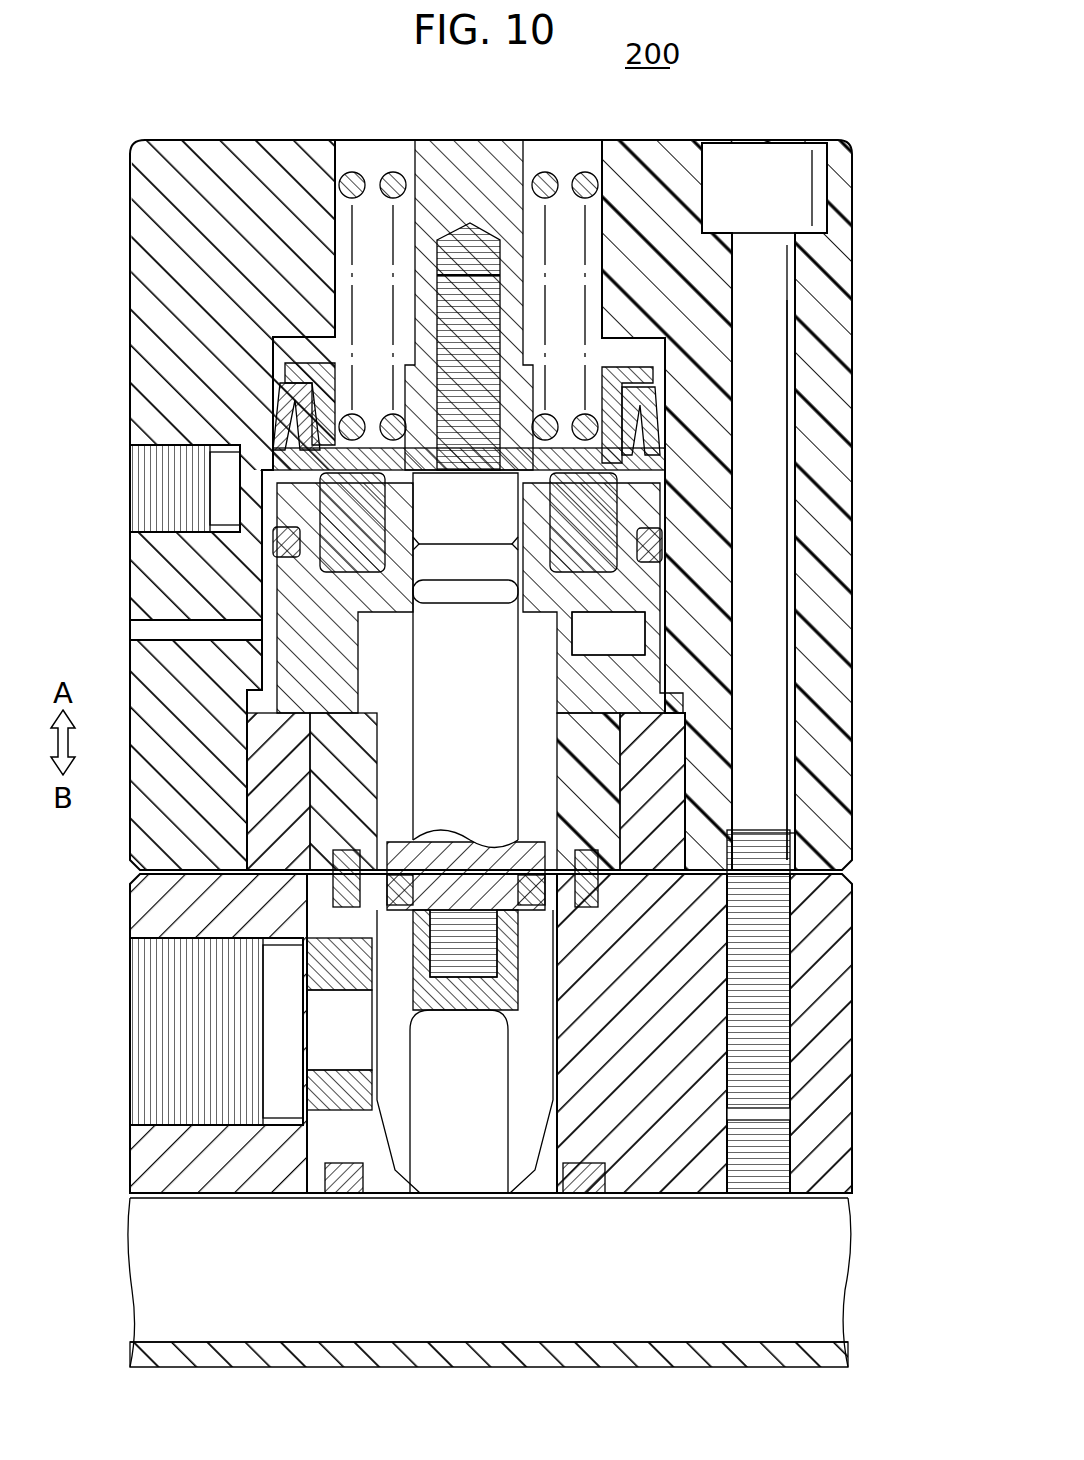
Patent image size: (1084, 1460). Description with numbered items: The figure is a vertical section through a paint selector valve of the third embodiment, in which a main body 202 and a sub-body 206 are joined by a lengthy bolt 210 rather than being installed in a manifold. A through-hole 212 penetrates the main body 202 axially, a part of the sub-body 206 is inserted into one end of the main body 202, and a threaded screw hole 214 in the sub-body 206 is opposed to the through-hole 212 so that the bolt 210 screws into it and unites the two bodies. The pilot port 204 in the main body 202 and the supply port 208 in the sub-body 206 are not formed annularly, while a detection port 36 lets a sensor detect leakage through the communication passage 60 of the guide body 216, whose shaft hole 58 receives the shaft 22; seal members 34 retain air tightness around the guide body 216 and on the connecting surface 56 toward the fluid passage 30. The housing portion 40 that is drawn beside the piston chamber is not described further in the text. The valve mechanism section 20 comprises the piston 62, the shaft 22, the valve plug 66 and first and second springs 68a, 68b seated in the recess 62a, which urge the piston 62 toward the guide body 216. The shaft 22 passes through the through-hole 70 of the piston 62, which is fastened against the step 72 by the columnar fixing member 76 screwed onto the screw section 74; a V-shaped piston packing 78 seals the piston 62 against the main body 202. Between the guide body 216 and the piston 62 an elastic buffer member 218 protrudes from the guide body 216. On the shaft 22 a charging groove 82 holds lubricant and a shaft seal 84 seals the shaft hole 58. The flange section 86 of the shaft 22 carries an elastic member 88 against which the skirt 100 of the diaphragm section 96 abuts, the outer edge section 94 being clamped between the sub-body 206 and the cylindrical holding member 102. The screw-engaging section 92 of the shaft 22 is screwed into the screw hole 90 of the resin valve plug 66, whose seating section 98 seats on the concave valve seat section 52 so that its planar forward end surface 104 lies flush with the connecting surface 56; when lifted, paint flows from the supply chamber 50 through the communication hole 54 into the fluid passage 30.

The main body 202 is at (854, 312).
The sub-body 206 is at (838, 1022).
The pilot port 204 is at (150, 508).
The supply port 208 is at (155, 1040).
The bolt 210 is at (758, 172).
The through-hole 212 is at (790, 478).
The screw hole 214 is at (790, 905).
The guide body 216 is at (660, 730).
The buffer member 218 is at (370, 508).
The valve mechanism section 20 is at (500, 668).
The shaft 22 is at (467, 691).
The fluid passage 30 is at (810, 1300).
The seal member 34 is at (665, 548).
The detection port 36 is at (150, 640).
The housing body 40 is at (530, 150).
The supply chamber 50 is at (501, 1095).
The valve seat section 52 is at (410, 1190).
The communication hole 54 is at (520, 1190).
The connecting surface 56 is at (635, 1195).
The shaft hole 58 is at (430, 595).
The communication passage 60 is at (620, 630).
The piston 62 is at (403, 368).
The recess 62a is at (360, 415).
The valve plug 66 is at (500, 1100).
The first spring 68a is at (393, 172).
The second spring 68b is at (352, 172).
The through-hole 70 is at (520, 352).
The step 72 is at (245, 462).
The screw section 74 is at (440, 300).
The fixing member 76 is at (441, 271).
The piston packing 78 is at (660, 408).
The charging groove 82 is at (486, 538).
The shaft seal 84 is at (476, 592).
The flange section 86 is at (525, 875).
The elastic member 88 is at (400, 875).
The screw hole 90 is at (440, 980).
The screw-engaging section 92 is at (475, 1005).
The outer edge section 94 is at (305, 972).
The diaphragm section 96 is at (380, 1030).
The seating section 98 is at (458, 1195).
The skirt 100 is at (380, 992).
The holding member 102 is at (370, 762).
The forward end surface 104 is at (432, 1195).